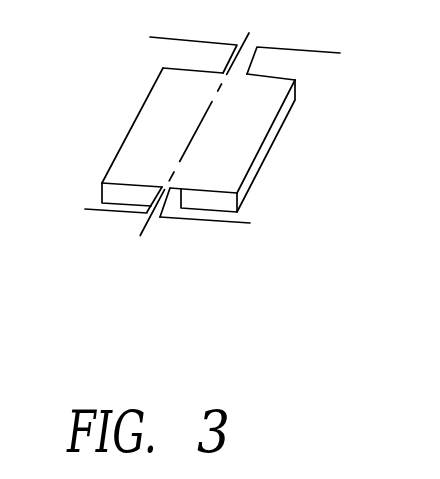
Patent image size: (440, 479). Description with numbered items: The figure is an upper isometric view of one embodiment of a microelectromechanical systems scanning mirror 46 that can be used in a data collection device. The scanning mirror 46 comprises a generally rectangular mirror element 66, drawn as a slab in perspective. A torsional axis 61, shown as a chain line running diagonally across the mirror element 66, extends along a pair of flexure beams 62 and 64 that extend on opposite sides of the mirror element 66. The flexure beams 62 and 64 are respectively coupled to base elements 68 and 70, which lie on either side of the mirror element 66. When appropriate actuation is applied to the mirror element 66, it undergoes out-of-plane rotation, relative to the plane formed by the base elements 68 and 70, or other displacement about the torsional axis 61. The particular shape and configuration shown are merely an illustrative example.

The scanning mirror 46 is at (66, 142).
The torsional axis 61 is at (148, 224).
The flexure beam 62 is at (253, 62).
The flexure beam 64 is at (143, 209).
The mirror element 66 is at (133, 125).
The base element 68 is at (325, 50).
The base element 70 is at (228, 223).